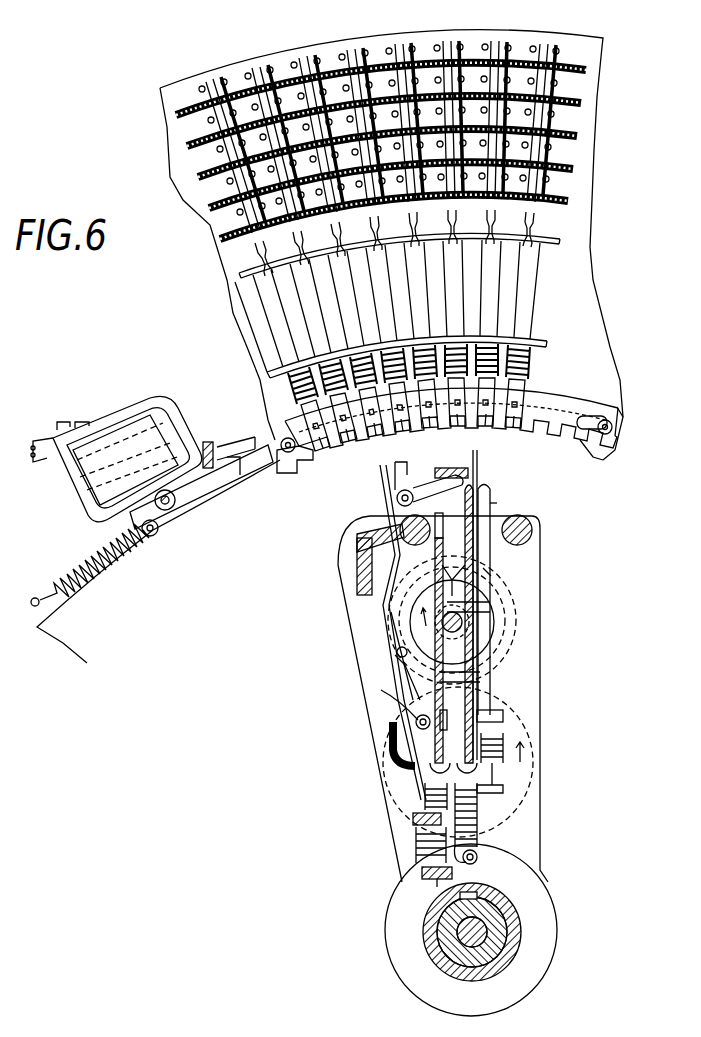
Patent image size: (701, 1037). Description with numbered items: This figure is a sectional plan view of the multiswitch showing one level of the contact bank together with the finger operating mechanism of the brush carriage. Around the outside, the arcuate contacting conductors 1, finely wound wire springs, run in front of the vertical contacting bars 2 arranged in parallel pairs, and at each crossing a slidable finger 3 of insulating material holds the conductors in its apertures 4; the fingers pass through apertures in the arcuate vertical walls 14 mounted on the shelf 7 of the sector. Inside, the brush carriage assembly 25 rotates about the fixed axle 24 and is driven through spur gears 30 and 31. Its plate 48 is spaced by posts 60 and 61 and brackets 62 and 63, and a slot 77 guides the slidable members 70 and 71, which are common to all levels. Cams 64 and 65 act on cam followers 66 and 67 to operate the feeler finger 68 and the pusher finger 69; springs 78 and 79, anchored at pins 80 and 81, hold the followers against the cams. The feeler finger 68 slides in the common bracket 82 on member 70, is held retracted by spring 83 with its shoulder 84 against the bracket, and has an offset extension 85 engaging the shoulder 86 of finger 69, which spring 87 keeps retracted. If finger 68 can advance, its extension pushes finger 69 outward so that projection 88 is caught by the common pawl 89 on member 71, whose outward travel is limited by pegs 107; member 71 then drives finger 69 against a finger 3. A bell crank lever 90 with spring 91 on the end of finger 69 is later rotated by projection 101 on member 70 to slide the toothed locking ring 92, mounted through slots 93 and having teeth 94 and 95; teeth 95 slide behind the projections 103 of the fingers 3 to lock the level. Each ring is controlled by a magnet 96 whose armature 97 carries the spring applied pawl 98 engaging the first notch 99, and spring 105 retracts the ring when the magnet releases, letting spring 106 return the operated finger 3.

The arcuate contacting conductors 1 is at (220, 239).
The vertical contacting bars 2 is at (381, 137).
The slidable finger 3 is at (522, 248).
The apertures 4 is at (379, 129).
The intermediate shelves 7 is at (573, 38).
The arcuate vertical walls 14 is at (562, 286).
The fixed axle 24 is at (475, 932).
The brush carriage assembly 25 is at (544, 767).
The spur gear 30 is at (513, 810).
The spur gear 31 is at (510, 642).
The plate 48 is at (537, 687).
The post 60 is at (533, 531).
The post 61 is at (408, 552).
The bracket 62 is at (390, 738).
The bracket 63 is at (357, 568).
The cam 64 is at (477, 647).
The cam 65 is at (497, 612).
The cam follower 66 is at (465, 587).
The cam follower 67 is at (462, 572).
The feeler finger 68 is at (479, 455).
The pusher finger 69 is at (420, 883).
The slidable member 70 is at (497, 503).
The slidable member 71 is at (478, 688).
The slot 77 is at (503, 717).
The spring 78 is at (485, 815).
The spring 79 is at (428, 787).
The pin 80 is at (478, 857).
The pin 81 is at (475, 866).
The common bracket 82 is at (487, 572).
The spring 83 is at (503, 763).
The shoulder 84 is at (500, 727).
The offset extension 85 is at (417, 850).
The shoulder 86 is at (414, 816).
The spring 87 is at (430, 868).
The projection 88 is at (398, 634).
The common pawl 89 is at (381, 690).
The bell crank lever 90 is at (398, 473).
The spring 91 is at (491, 492).
The toothed locking ring 92 is at (581, 441).
The slots 93 is at (595, 410).
The teeth 94 is at (311, 463).
The teeth 95 is at (286, 430).
The magnet 96 is at (120, 433).
The armature 97 is at (190, 490).
The spring applied pawl 98 is at (237, 438).
The first notch 99 is at (260, 440).
The projection 101 is at (452, 468).
The projection 103 is at (528, 404).
The spring 105 is at (110, 567).
The spring 106 is at (527, 361).
The pegs 107 is at (392, 662).